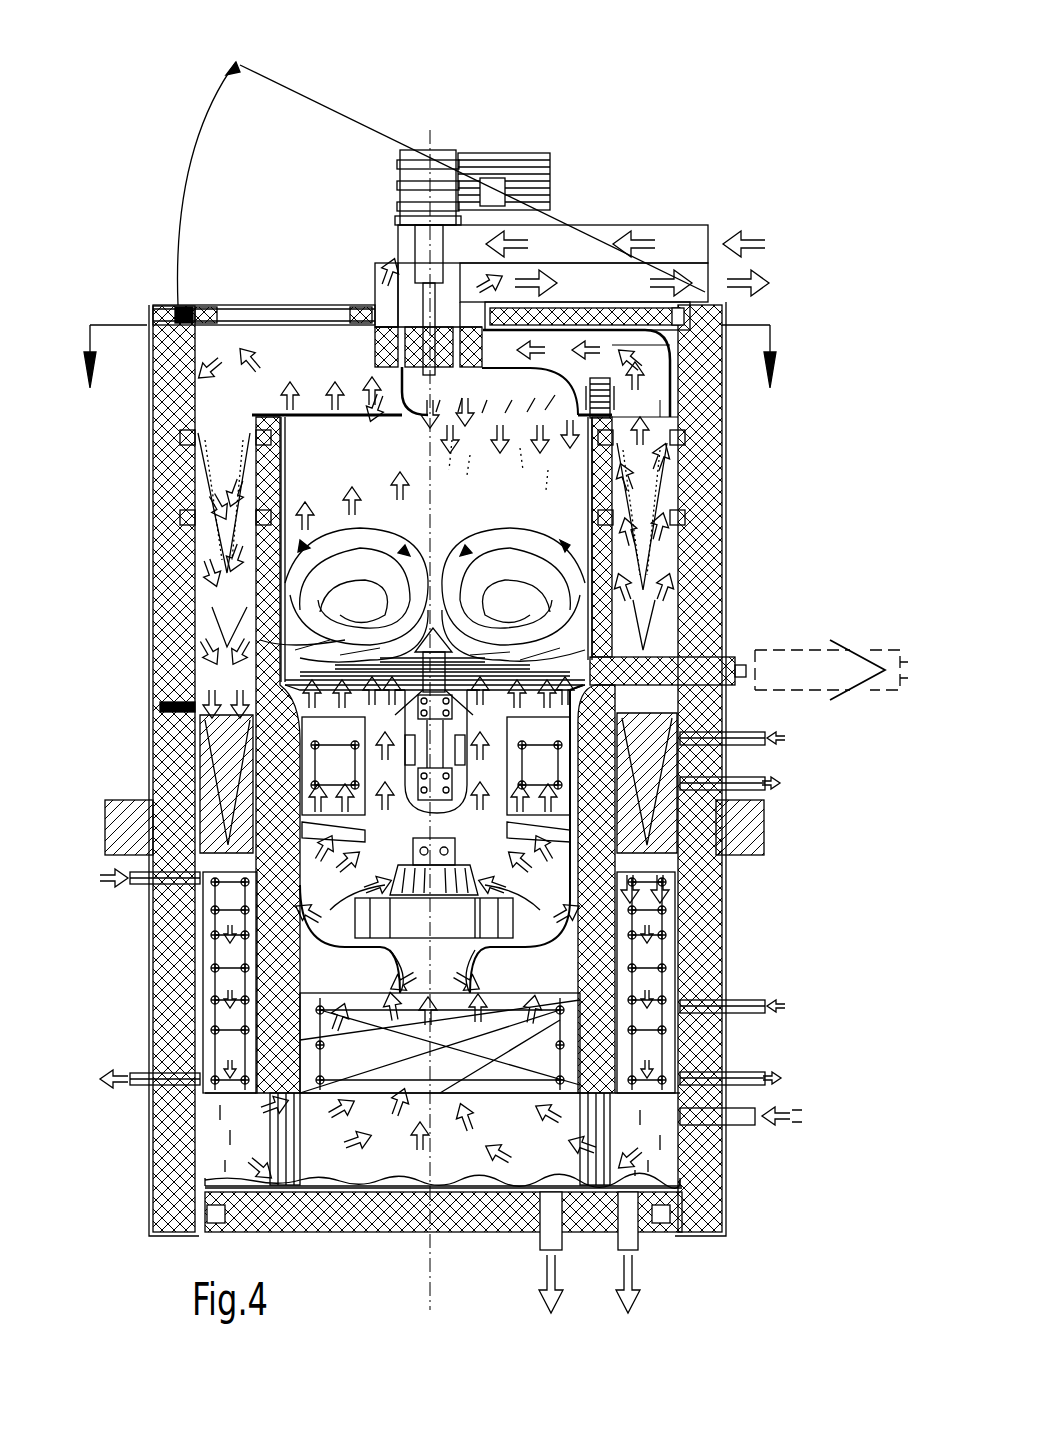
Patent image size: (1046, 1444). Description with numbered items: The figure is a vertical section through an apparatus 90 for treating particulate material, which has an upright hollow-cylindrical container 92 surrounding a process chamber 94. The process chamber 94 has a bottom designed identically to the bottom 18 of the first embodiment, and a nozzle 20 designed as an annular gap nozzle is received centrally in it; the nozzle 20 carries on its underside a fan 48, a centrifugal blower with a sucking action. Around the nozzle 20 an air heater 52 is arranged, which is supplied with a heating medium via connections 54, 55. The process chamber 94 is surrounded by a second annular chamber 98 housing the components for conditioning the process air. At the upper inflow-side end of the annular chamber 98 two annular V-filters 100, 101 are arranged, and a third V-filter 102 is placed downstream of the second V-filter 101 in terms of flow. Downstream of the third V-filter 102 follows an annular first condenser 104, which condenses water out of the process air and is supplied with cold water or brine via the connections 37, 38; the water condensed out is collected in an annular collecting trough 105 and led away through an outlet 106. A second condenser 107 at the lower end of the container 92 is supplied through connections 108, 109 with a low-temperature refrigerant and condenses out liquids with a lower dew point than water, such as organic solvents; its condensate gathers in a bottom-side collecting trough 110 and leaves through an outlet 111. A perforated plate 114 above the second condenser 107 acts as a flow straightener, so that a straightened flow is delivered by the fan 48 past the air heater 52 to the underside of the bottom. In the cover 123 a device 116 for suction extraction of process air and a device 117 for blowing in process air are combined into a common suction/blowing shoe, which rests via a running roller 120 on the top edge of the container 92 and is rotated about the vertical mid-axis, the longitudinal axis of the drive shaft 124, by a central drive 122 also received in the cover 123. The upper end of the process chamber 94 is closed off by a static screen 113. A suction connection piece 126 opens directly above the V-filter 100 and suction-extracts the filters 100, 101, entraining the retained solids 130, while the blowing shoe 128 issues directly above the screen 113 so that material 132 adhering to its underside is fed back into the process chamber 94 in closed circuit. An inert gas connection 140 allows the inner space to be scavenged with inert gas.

The apparatus 90 is at (655, 160).
The central drive 122 is at (522, 152).
The blowing shoe 128 is at (523, 377).
The running roller 120 is at (593, 380).
The device for blowing in process air 117 is at (690, 245).
The device for suction extraction of process air 116 is at (700, 290).
The solids 130 is at (712, 320).
The suction connection piece 126 is at (690, 415).
The V-filter 100 is at (657, 465).
The V-filter 101 is at (680, 497).
The nozzle 20 is at (500, 600).
The bottom 18 is at (523, 660).
The process chamber 94 is at (505, 502).
The material 132 is at (533, 467).
The cover 123 is at (357, 307).
The drive shaft 124 is at (423, 297).
The static screen 113 is at (318, 413).
The container 92 is at (257, 543).
The second annular chamber 98 is at (200, 672).
The air heater 52 is at (327, 770).
The connection 37 is at (140, 885).
The first condenser 104 is at (205, 975).
The connection 38 is at (140, 1072).
The annular collecting trough 105 is at (230, 1232).
The second condenser 107 is at (428, 1070).
The bottom-side collecting trough 110 is at (415, 1183).
The outlet 111 is at (545, 1247).
The outlet 106 is at (640, 1247).
The inert gas connection 140 is at (745, 1125).
The connection 109 is at (748, 1078).
The connection 108 is at (748, 1006).
The perforated plate 114 is at (515, 985).
The fan 48 is at (620, 890).
The third V-filter 102 is at (700, 700).
The connection 54 is at (745, 738).
The connection 55 is at (745, 783).